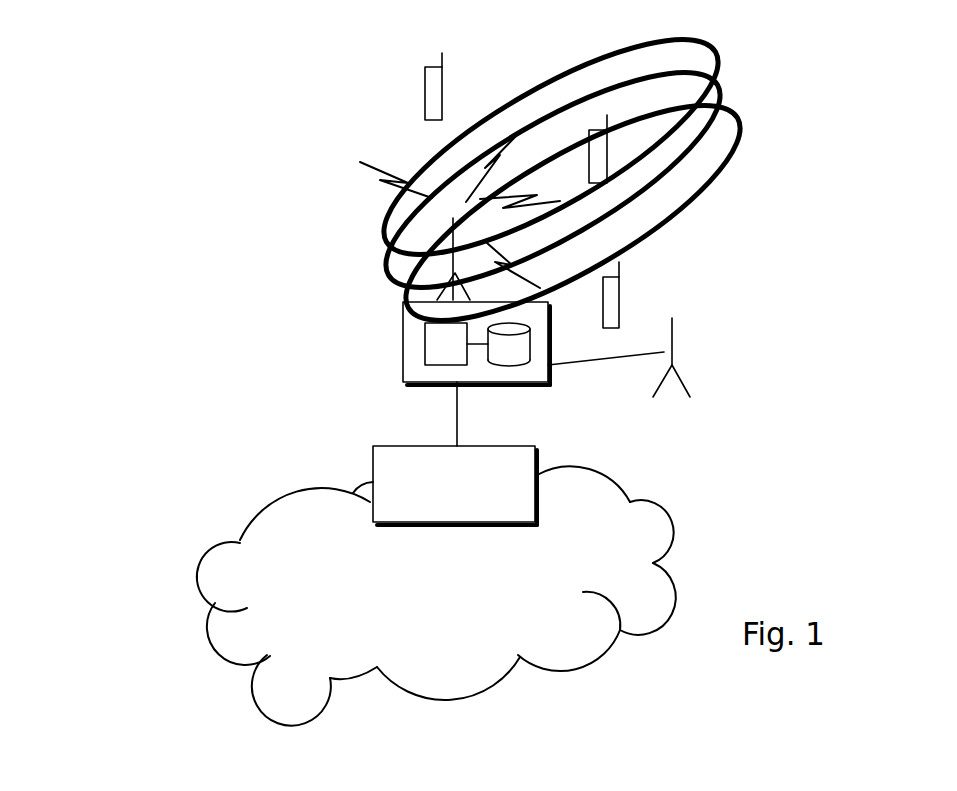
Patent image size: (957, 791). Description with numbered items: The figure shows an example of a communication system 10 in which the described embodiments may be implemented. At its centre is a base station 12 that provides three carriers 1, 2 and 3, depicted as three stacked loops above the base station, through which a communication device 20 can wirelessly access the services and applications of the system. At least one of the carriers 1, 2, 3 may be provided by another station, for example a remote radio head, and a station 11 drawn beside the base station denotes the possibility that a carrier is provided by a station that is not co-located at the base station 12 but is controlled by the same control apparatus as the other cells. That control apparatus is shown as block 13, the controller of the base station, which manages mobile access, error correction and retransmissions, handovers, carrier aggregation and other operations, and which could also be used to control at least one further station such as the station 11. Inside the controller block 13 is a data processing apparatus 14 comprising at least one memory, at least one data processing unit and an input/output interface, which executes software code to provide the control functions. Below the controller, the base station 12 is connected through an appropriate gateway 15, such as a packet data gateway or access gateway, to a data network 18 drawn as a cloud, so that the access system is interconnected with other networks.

The carrier 1 is at (712, 83).
The carrier 2 is at (726, 144).
The carrier 3 is at (700, 45).
The system 10 is at (277, 222).
The station 11 is at (673, 335).
The base station 12 is at (445, 258).
The block 13 is at (403, 346).
The data processing apparatus 14 is at (432, 342).
The gateway 15 is at (373, 467).
The data network 18 is at (270, 527).
The communication device 20 is at (608, 178).